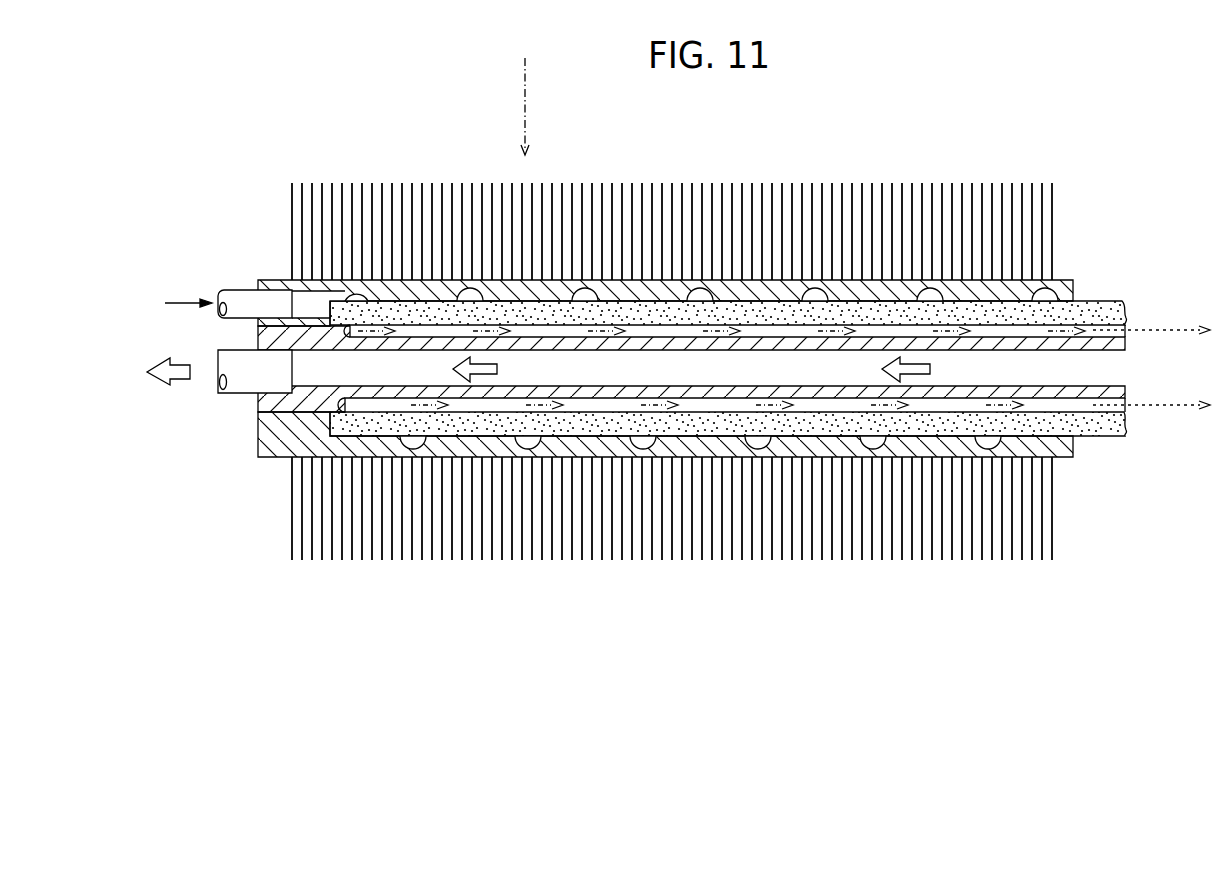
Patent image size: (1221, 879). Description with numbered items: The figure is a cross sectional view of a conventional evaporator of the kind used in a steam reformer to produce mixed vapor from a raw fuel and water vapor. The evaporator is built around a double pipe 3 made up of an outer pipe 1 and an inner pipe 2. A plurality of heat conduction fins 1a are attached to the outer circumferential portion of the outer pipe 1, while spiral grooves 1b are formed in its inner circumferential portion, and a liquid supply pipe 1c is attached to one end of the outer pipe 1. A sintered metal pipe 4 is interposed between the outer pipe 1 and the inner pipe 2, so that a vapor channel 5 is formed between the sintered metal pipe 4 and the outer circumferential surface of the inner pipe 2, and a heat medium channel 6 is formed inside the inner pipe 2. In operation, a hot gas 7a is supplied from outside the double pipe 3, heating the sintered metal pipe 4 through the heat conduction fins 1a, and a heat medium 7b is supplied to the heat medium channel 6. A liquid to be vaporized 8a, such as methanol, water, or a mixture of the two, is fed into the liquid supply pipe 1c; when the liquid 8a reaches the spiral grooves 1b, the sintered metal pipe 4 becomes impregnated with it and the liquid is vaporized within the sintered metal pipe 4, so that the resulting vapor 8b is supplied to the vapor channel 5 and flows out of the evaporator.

The outer pipe 1 is at (275, 447).
The heat conduction fins 1a is at (362, 510).
The spiral grooves 1b is at (466, 292).
The liquid supply pipe 1c is at (247, 298).
The inner pipe 2 is at (272, 403).
The double pipe 3 is at (193, 402).
The sintered metal pipe 4 is at (1086, 312).
The vapor channel 5 is at (492, 406).
The heat medium channel 6 is at (1055, 368).
The hot gas 7a is at (522, 107).
The heat medium 7b is at (160, 366).
The liquid to be vaporized 8a is at (185, 303).
The vapor 8b is at (1175, 327).